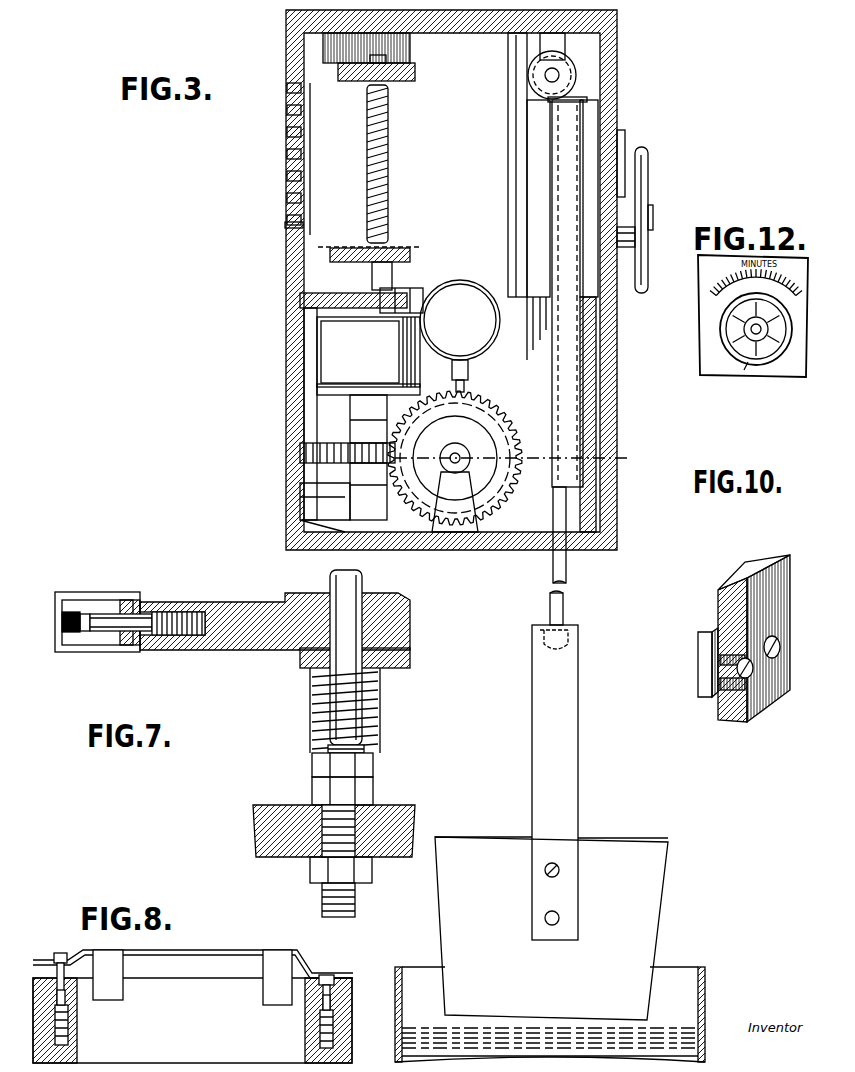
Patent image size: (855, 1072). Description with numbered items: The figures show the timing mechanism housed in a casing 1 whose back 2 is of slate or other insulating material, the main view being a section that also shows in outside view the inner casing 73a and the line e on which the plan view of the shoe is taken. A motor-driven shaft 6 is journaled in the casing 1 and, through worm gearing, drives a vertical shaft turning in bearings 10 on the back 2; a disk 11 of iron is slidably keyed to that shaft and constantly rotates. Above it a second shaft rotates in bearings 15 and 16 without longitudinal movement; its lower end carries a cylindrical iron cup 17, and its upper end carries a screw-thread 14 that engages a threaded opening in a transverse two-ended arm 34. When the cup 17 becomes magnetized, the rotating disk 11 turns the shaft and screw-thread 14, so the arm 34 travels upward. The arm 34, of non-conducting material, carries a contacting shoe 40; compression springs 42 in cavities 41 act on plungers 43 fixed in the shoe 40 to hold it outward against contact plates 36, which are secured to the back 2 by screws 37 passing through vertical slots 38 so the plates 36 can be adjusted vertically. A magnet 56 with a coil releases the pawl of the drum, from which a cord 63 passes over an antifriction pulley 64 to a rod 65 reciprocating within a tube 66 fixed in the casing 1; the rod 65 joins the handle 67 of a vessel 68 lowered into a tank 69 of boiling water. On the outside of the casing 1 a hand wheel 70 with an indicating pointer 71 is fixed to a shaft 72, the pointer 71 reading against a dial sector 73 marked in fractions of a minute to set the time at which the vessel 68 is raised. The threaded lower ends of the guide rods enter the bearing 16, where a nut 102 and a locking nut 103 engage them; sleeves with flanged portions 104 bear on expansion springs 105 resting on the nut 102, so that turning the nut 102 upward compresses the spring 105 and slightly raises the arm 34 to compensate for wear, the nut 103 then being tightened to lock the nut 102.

In FIG. 3, the casing 1 is at (618, 87).
In FIG. 3, the back 2 is at (285, 262).
In FIG. 3, the shaft 6 is at (288, 226).
In FIG. 3, the bearings 10 is at (284, 490).
In FIG. 3, the disk 11 is at (355, 418).
In FIG. 3, the screw-thread 14 is at (388, 172).
In FIG. 3, the bearing 15 is at (395, 79).
In FIG. 3, the bearing 16 is at (383, 284).
In FIG. 7, the bearing 16 is at (256, 833).
In FIG. 3, the cylindrical cup 17 is at (332, 353).
In FIG. 7, the transverse two-ended arm 34 is at (275, 616).
In FIG. 8, the transverse two-ended arm 34 is at (192, 1020).
In FIG. 10, the contact plates 36 is at (702, 666).
In FIG. 3, the screws 37 is at (287, 174).
In FIG. 10, the screws 37 is at (773, 697).
In FIG. 3, the vertical slots 38 is at (287, 150).
In FIG. 10, the vertical slots 38 is at (718, 701).
In FIG. 7, the contacting shoe 40 is at (93, 593).
In FIG. 8, the contacting shoe 40 is at (260, 973).
In FIG. 7, the cavities 41 is at (193, 644).
In FIG. 8, the cavities 41 is at (73, 1023).
In FIG. 7, the compression springs 42 is at (173, 643).
In FIG. 8, the compression springs 42 is at (73, 1036).
In FIG. 7, the plungers 43 is at (120, 636).
In FIG. 8, the plungers 43 is at (360, 986).
In FIG. 3, the magnet 56 is at (472, 296).
In FIG. 3, the cord 63 is at (527, 229).
In FIG. 3, the antifriction pulley 64 is at (530, 77).
In FIG. 3, the rod 65 is at (561, 182).
In FIG. 3, the tube 66 is at (463, 461).
In FIG. 3, the handle 67 is at (570, 689).
In FIG. 3, the vessel 68 is at (551, 928).
In FIG. 3, the tank 69 is at (550, 1014).
In FIG. 3, the hand wheel 70 is at (648, 256).
In FIG. 12, the hand wheel 70 is at (791, 342).
In FIG. 3, the indicating pointer 71 is at (625, 138).
In FIG. 12, the indicating pointer 71 is at (752, 362).
In FIG. 3, the shaft 72 is at (652, 216).
In FIG. 12, the shaft 72 is at (762, 323).
In FIG. 12, the dial sector 73 is at (798, 297).
In FIG. 3, the inner casing 73a is at (516, 160).
In FIG. 3, the section line e— e is at (410, 260).
In FIG. 7, the nut 102 is at (373, 769).
In FIG. 7, the nut 103 is at (312, 788).
In FIG. 7, the flanged portions 104 is at (300, 668).
In FIG. 7, the expansion springs 105 is at (377, 704).